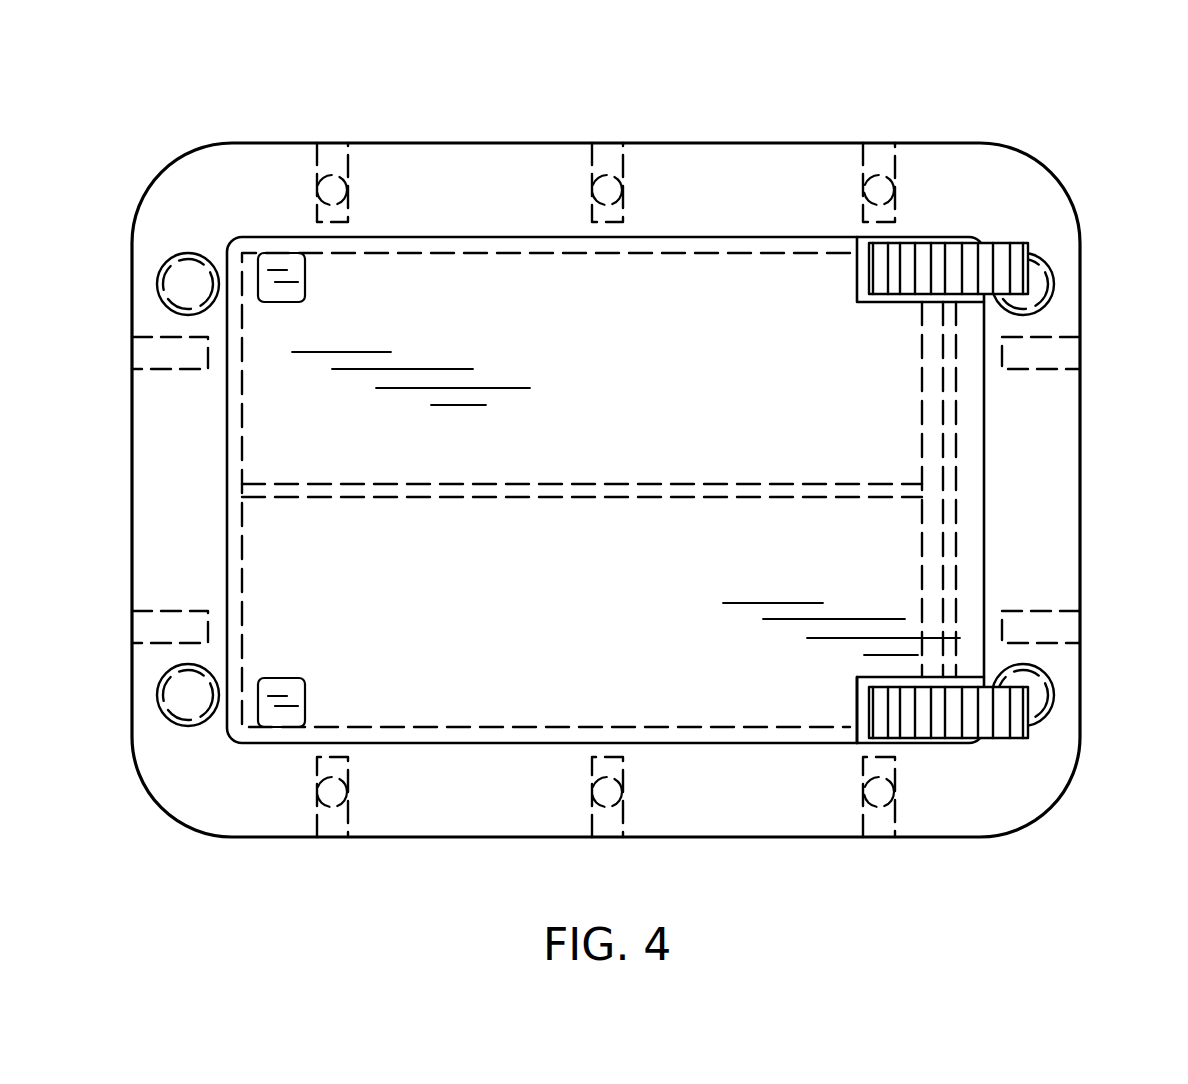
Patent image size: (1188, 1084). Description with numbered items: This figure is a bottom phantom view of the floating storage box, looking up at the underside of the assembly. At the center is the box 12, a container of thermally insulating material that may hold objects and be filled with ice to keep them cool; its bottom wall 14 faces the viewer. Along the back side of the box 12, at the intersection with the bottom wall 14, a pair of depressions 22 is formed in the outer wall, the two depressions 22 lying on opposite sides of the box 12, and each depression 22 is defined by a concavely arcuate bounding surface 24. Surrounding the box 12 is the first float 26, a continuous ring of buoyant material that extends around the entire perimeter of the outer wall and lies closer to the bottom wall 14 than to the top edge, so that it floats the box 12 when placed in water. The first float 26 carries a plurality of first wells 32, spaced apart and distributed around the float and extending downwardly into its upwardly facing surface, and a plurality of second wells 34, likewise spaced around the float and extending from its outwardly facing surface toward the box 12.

The box 12 is at (724, 237).
The bottom wall 14 is at (797, 245).
The depressions 22 is at (905, 303).
The bounding surface 24 is at (862, 700).
The first float 26 is at (1037, 165).
The first wells 32 is at (333, 803).
The second wells 34 is at (335, 143).